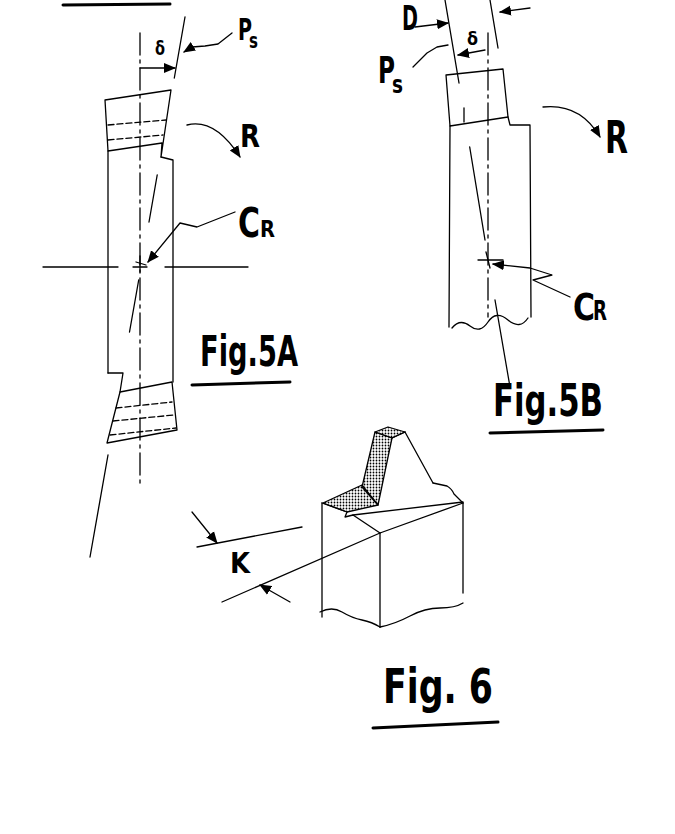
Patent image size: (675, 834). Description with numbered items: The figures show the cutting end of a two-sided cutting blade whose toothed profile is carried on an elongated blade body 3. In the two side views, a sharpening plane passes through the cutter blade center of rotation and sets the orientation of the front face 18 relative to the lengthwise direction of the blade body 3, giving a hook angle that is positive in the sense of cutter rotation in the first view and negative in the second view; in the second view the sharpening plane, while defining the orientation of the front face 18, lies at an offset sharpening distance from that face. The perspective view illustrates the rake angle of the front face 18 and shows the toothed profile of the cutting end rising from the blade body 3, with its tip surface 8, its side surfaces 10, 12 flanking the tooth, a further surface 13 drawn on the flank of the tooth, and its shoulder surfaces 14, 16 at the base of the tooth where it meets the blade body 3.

In FIG. 5A, the blade body 3 is at (165, 298).
In FIG. 5B, the blade body 3 is at (520, 223).
In FIG. 6, the blade body 3 is at (450, 577).
In FIG. 5A, the front face 18 is at (173, 110).
In FIG. 5B, the front face 18 is at (514, 94).
In FIG. 6, the tip surface 8 is at (385, 428).
In FIG. 6, the side surface 10 is at (377, 450).
In FIG. 6, the side surface 12 is at (418, 438).
In FIG. 6, the flank face 13 is at (420, 455).
In FIG. 6, the shoulder surface 14 is at (352, 493).
In FIG. 6, the shoulder surface 16 is at (434, 482).